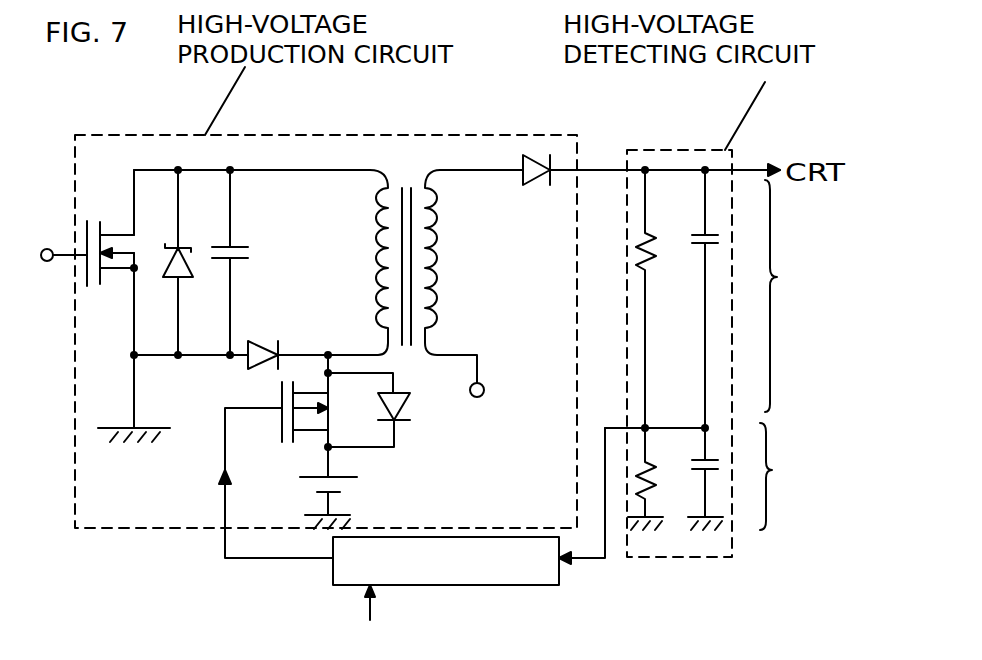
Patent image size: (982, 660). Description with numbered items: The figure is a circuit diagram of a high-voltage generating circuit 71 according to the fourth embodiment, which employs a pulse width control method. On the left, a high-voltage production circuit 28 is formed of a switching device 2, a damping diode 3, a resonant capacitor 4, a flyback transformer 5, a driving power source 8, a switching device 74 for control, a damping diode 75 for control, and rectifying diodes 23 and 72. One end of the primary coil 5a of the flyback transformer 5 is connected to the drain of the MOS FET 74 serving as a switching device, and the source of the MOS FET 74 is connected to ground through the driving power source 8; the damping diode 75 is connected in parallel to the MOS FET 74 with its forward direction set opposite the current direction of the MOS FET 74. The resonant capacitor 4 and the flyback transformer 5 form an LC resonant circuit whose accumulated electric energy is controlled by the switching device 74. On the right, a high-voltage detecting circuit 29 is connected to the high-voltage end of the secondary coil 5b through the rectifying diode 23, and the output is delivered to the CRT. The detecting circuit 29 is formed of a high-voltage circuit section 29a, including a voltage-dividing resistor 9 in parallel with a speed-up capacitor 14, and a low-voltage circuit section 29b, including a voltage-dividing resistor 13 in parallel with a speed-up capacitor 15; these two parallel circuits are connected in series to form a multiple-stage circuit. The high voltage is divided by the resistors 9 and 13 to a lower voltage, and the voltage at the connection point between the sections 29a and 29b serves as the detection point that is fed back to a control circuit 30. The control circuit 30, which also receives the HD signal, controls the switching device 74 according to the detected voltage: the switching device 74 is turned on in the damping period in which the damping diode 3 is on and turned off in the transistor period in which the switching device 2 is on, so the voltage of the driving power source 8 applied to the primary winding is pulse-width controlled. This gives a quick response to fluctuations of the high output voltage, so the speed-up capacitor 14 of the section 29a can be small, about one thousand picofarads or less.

The high-voltage generating circuit 71 is at (165, 110).
The high-voltage production circuit 28 is at (262, 135).
The high-voltage detecting circuit 29 is at (665, 150).
The switching device 2 is at (113, 275).
The damping diode 3 is at (172, 278).
The resonant capacitor 4 is at (241, 246).
The flyback transformer 5 is at (425, 238).
The primary coil 5a is at (370, 227).
The secondary coil 5b is at (443, 248).
The rectifying diode 23 is at (530, 157).
The rectifying diode 72 is at (252, 340).
The switching device for control 74 is at (278, 417).
The damping diode for control 75 is at (407, 402).
The driving power source 8 is at (317, 493).
The control circuit 30 is at (450, 585).
The voltage-dividing resistor 9 is at (637, 240).
The speed-up capacitor 14 is at (710, 247).
The voltage-dividing resistor 13 is at (652, 468).
The speed-up capacitor 15 is at (703, 473).
The high-voltage circuit section 29a is at (805, 296).
The low-voltage circuit section 29b is at (795, 476).